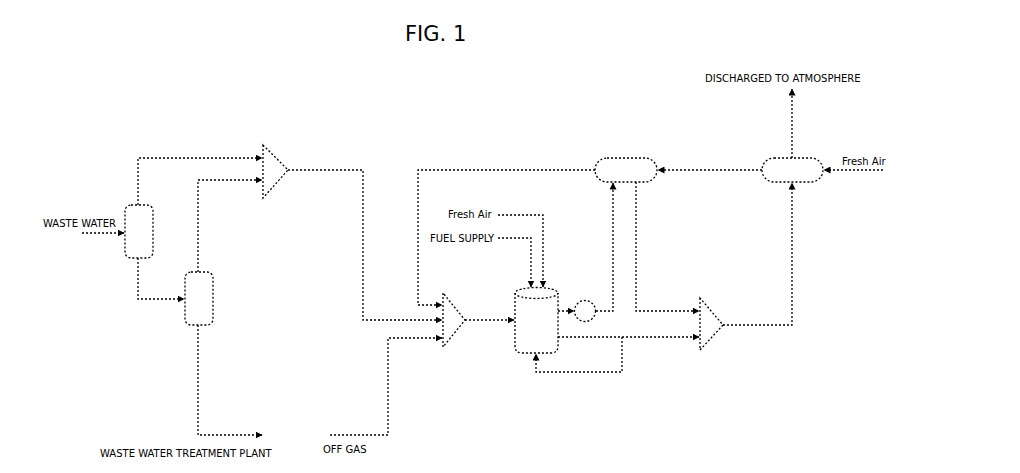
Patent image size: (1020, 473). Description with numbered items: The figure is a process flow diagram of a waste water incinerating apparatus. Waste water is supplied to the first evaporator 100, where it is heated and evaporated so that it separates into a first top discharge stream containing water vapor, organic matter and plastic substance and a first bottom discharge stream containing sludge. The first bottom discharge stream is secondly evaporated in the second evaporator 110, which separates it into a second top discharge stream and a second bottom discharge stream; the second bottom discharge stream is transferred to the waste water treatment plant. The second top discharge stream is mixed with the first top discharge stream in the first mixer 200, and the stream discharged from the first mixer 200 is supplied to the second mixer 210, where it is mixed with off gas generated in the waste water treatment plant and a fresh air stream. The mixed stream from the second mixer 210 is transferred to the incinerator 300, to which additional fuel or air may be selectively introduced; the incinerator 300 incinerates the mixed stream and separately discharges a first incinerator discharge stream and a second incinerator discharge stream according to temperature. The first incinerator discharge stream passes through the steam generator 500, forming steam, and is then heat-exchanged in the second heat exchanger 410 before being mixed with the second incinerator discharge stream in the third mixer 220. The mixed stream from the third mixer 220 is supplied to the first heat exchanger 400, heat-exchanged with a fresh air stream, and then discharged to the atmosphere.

The first evaporator 100 is at (137, 203).
The second evaporator 110 is at (213, 287).
The first mixer 200 is at (263, 147).
The second mixer 210 is at (457, 342).
The third mixer 220 is at (710, 307).
The incinerator 300 is at (558, 287).
The first heat exchanger 400 is at (805, 158).
The second heat exchanger 410 is at (610, 158).
The steam generator 500 is at (592, 299).